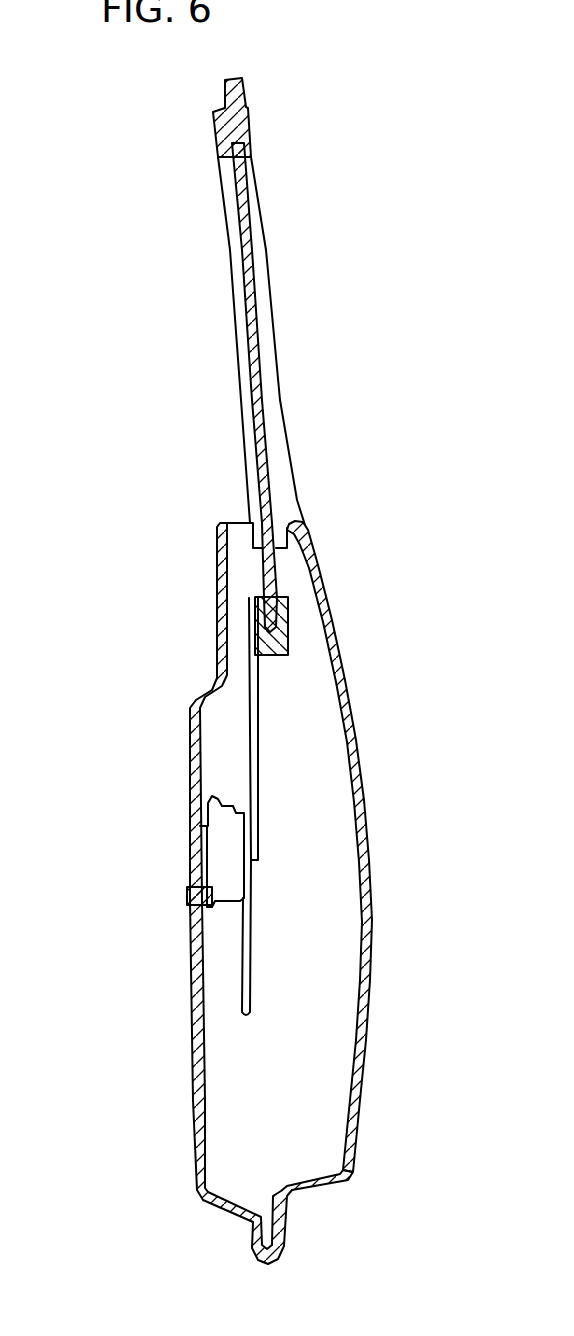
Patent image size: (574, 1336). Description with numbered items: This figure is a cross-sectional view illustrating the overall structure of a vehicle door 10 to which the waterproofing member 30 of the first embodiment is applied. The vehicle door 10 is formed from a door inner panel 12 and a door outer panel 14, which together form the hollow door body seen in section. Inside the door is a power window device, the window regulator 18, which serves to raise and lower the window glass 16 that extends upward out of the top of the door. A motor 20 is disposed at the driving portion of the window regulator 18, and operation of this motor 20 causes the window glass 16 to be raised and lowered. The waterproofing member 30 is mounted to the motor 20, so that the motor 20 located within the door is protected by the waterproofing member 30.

The vehicle door 10 is at (343, 483).
The door inner panel 12 is at (192, 1065).
The door outer panel 14 is at (366, 912).
The window glass 16 is at (262, 327).
The window regulator 18 is at (262, 766).
The motor 20 is at (213, 827).
The waterproofing member 30 is at (187, 897).